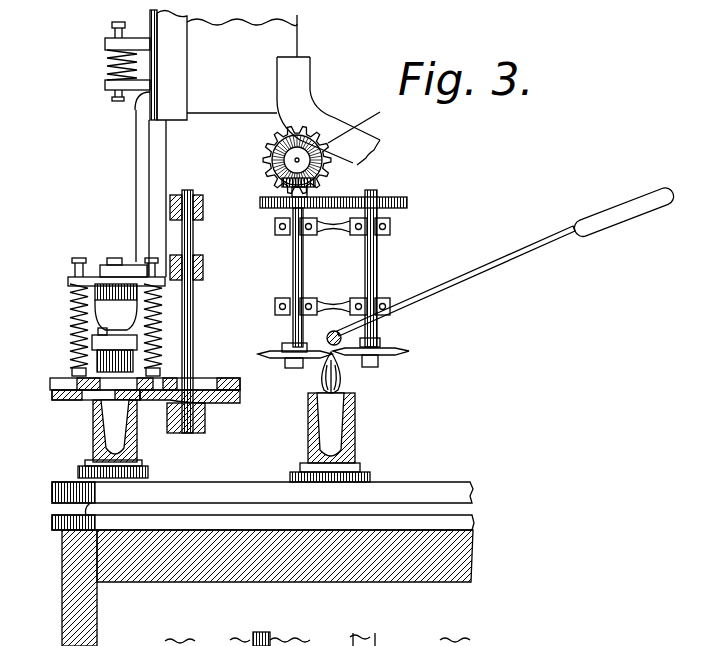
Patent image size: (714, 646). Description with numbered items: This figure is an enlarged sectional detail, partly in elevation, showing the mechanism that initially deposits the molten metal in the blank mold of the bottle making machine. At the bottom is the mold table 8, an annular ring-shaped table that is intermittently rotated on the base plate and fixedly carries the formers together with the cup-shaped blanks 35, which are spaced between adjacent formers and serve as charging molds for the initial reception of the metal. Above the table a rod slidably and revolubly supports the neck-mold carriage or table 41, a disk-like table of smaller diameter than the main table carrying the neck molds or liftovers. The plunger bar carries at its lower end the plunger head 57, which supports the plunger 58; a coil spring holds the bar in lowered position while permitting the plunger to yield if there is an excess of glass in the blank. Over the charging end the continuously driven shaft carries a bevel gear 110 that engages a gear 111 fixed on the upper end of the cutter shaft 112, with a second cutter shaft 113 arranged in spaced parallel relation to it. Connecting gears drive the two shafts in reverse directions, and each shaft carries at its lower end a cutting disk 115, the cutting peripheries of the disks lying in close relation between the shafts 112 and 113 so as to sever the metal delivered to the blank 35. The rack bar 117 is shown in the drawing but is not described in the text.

The mold table 8 is at (420, 493).
The blank 35 is at (98, 420).
The neck-mold carriage or table 41 is at (200, 402).
The plunger head 57 is at (70, 312).
The plunger 58 is at (110, 373).
The bevel gear 110 is at (342, 130).
The gear 111 is at (262, 165).
The cutter shaft 112 is at (291, 247).
The second cutter shaft 113 is at (384, 252).
The cutting disk 115 is at (280, 348).
The rack bar 117 is at (323, 196).